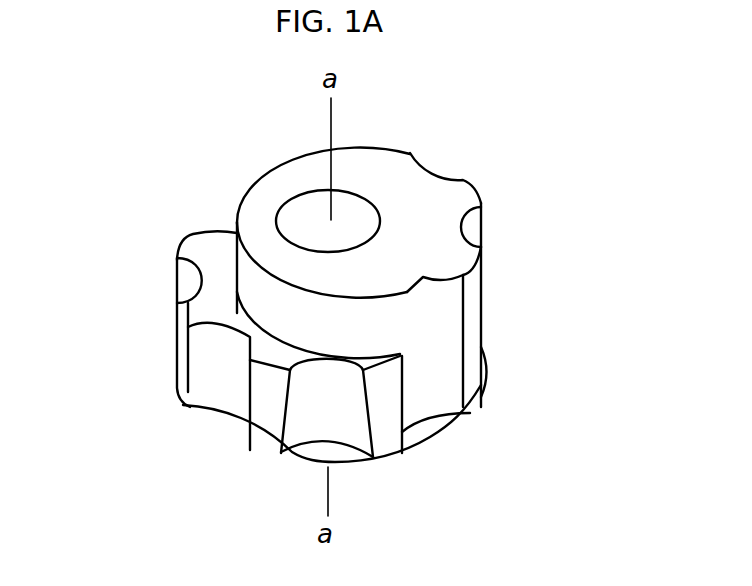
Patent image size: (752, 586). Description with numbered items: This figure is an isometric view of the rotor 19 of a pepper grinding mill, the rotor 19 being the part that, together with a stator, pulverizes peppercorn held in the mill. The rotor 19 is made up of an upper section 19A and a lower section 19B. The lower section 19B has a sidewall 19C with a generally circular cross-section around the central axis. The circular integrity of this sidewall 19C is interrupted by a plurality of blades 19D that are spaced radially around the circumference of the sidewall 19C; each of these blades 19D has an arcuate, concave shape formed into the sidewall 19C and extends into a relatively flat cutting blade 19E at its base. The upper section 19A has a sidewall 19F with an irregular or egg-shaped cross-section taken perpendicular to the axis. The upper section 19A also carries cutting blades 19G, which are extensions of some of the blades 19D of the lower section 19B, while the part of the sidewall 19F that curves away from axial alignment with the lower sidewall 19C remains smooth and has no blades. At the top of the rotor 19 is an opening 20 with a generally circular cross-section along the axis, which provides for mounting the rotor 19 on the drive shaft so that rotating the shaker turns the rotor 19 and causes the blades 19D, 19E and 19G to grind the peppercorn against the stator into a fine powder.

The rotor 19 is at (533, 188).
The upper section 19A is at (258, 285).
The lower section 19B is at (186, 345).
The sidewall 19C is at (268, 408).
The blades 19D is at (210, 382).
The cutting blade 19E is at (225, 418).
The sidewall 19F is at (250, 311).
The cutting blades 19G is at (432, 173).
The opening 20 is at (347, 210).